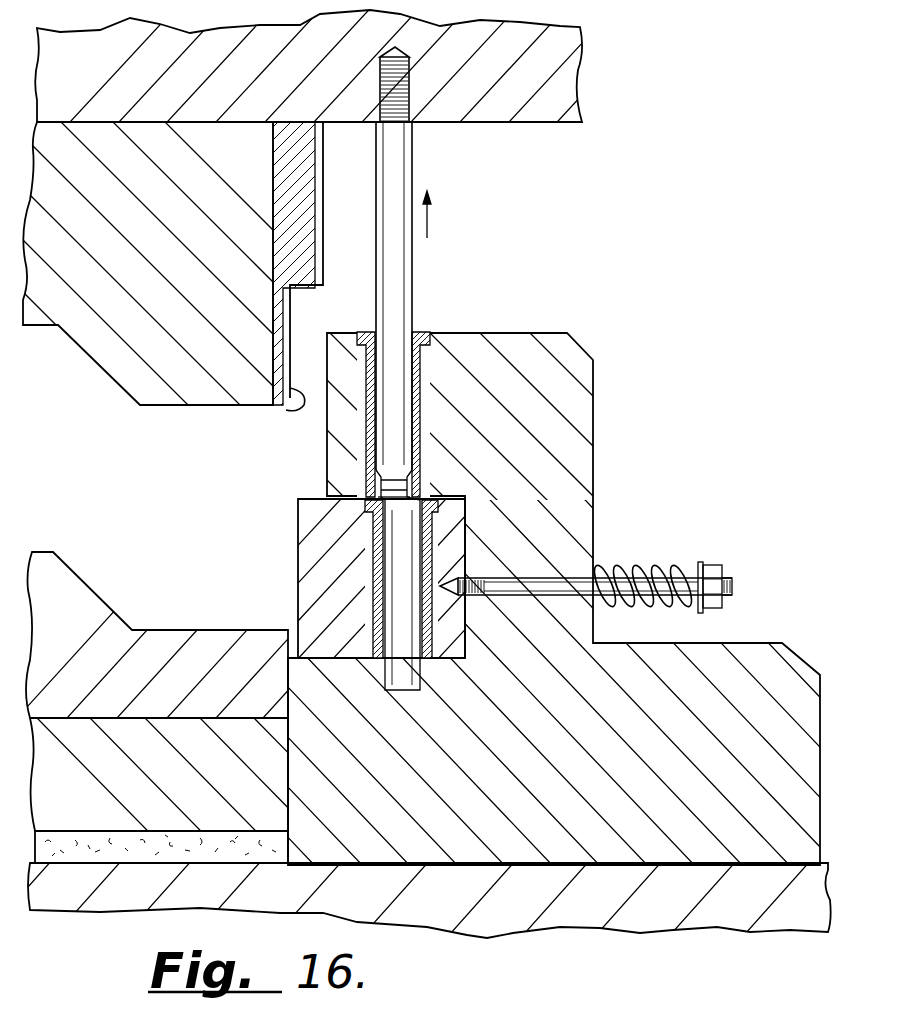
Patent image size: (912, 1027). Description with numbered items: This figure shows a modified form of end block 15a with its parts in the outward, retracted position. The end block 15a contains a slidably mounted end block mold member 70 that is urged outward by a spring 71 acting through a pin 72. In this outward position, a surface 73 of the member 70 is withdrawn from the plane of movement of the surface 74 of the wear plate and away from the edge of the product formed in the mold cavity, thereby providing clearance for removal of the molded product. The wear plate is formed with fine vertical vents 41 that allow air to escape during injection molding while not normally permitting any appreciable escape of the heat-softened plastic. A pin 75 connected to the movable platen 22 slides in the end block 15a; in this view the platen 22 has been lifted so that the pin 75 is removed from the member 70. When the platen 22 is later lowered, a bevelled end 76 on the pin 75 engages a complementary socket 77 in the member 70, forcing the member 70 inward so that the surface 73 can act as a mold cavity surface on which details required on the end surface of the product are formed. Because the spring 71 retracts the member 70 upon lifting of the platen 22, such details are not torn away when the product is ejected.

The movable platen 22 is at (553, 113).
The vent 41 is at (320, 206).
The surface of the wear plate 74 is at (302, 395).
The end block 15a is at (568, 446).
The end block mold member 70 is at (448, 520).
The surface of the member 73 is at (298, 553).
The pin 75 is at (403, 165).
The bevelled end 76 is at (397, 472).
The socket 77 is at (403, 500).
The spring 71 is at (632, 572).
The pin 72 is at (672, 570).